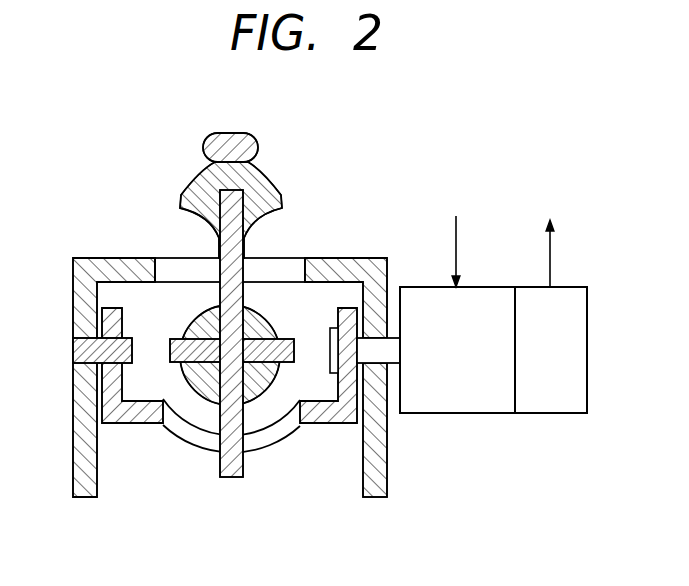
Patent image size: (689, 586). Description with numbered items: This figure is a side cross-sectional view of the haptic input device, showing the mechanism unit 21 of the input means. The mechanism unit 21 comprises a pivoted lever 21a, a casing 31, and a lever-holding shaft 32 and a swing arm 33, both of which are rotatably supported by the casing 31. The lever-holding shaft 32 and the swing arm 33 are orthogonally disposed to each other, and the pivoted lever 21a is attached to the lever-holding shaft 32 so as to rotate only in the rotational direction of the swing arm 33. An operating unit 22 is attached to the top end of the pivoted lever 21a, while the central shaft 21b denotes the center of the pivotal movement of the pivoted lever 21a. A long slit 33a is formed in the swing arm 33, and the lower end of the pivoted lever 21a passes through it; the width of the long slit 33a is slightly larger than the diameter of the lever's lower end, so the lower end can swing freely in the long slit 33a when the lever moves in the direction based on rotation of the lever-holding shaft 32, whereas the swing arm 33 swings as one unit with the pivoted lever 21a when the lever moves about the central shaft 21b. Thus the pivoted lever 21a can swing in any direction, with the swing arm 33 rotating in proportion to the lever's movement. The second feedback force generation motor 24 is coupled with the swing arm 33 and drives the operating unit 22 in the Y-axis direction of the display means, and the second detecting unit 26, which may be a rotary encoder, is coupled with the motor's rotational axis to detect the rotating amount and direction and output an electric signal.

The mechanism unit 21 is at (220, 306).
The pivoted lever 21a is at (232, 478).
The central shaft 21b is at (197, 359).
The operating unit 22 is at (238, 133).
The second feedback force generation motor 24 is at (483, 414).
The second detecting unit 26 is at (562, 414).
The casing 31 is at (73, 293).
The lever-holding shaft 32 is at (266, 318).
The swing arm 33 is at (140, 424).
The long slit 33a is at (263, 441).